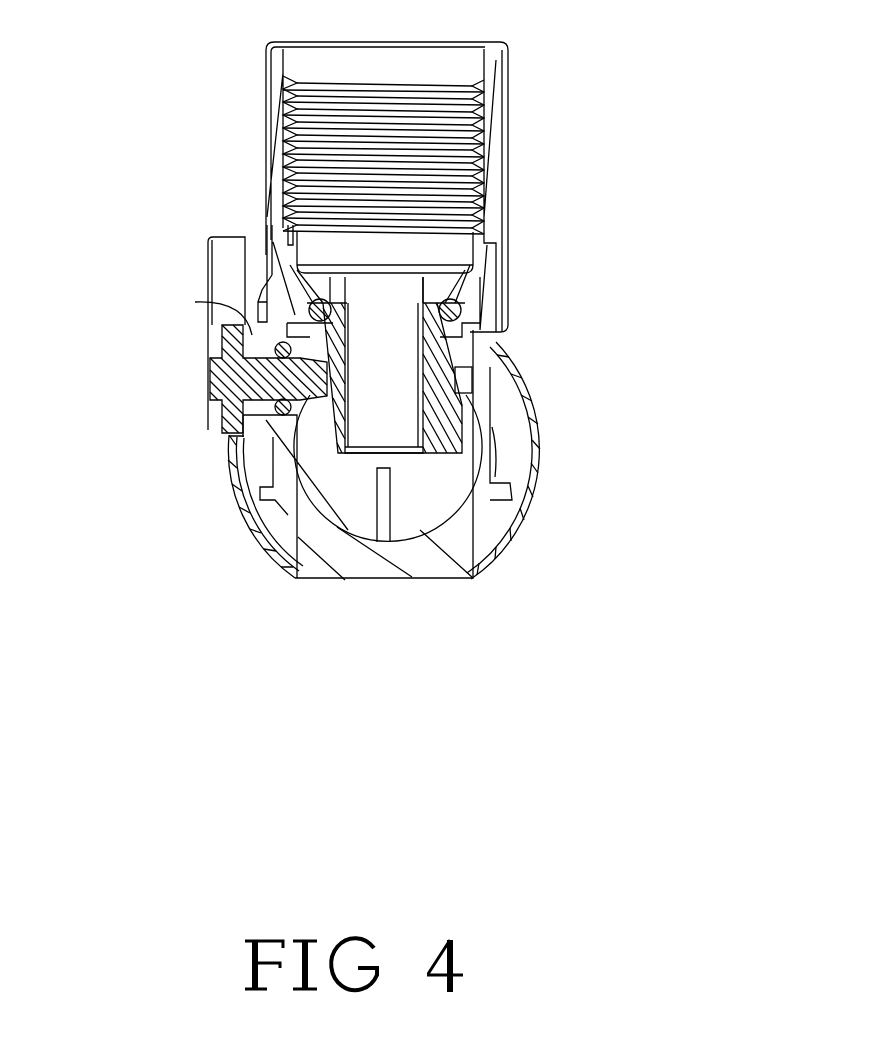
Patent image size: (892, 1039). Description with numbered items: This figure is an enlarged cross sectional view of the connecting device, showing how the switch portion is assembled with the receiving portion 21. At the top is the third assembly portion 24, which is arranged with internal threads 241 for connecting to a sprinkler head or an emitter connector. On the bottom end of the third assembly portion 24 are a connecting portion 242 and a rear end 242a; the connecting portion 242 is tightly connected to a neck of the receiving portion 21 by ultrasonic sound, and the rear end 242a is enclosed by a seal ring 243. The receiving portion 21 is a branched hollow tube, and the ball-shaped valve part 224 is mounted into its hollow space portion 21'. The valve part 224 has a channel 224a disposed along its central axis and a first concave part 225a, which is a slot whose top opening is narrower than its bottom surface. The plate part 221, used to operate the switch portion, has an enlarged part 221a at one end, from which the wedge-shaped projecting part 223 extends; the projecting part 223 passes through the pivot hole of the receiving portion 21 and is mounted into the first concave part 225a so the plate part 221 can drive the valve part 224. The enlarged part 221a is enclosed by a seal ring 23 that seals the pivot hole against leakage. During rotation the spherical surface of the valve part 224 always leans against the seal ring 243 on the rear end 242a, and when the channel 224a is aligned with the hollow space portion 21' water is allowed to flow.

The third assembly portion 24 is at (268, 80).
The internal threads 241 is at (447, 110).
The connecting portion 242 is at (480, 280).
The rear end 242a is at (312, 300).
The seal ring 243 is at (463, 313).
The channel 224a is at (400, 357).
The valve part 224 is at (463, 408).
The plate part 221 is at (207, 262).
The enlarged part 221a is at (250, 338).
The seal ring 23 is at (328, 332).
The projecting part 223 is at (298, 415).
The first concave part 225a is at (300, 500).
The receiving portion 21 is at (465, 455).
The hollow space portion 21' is at (433, 504).